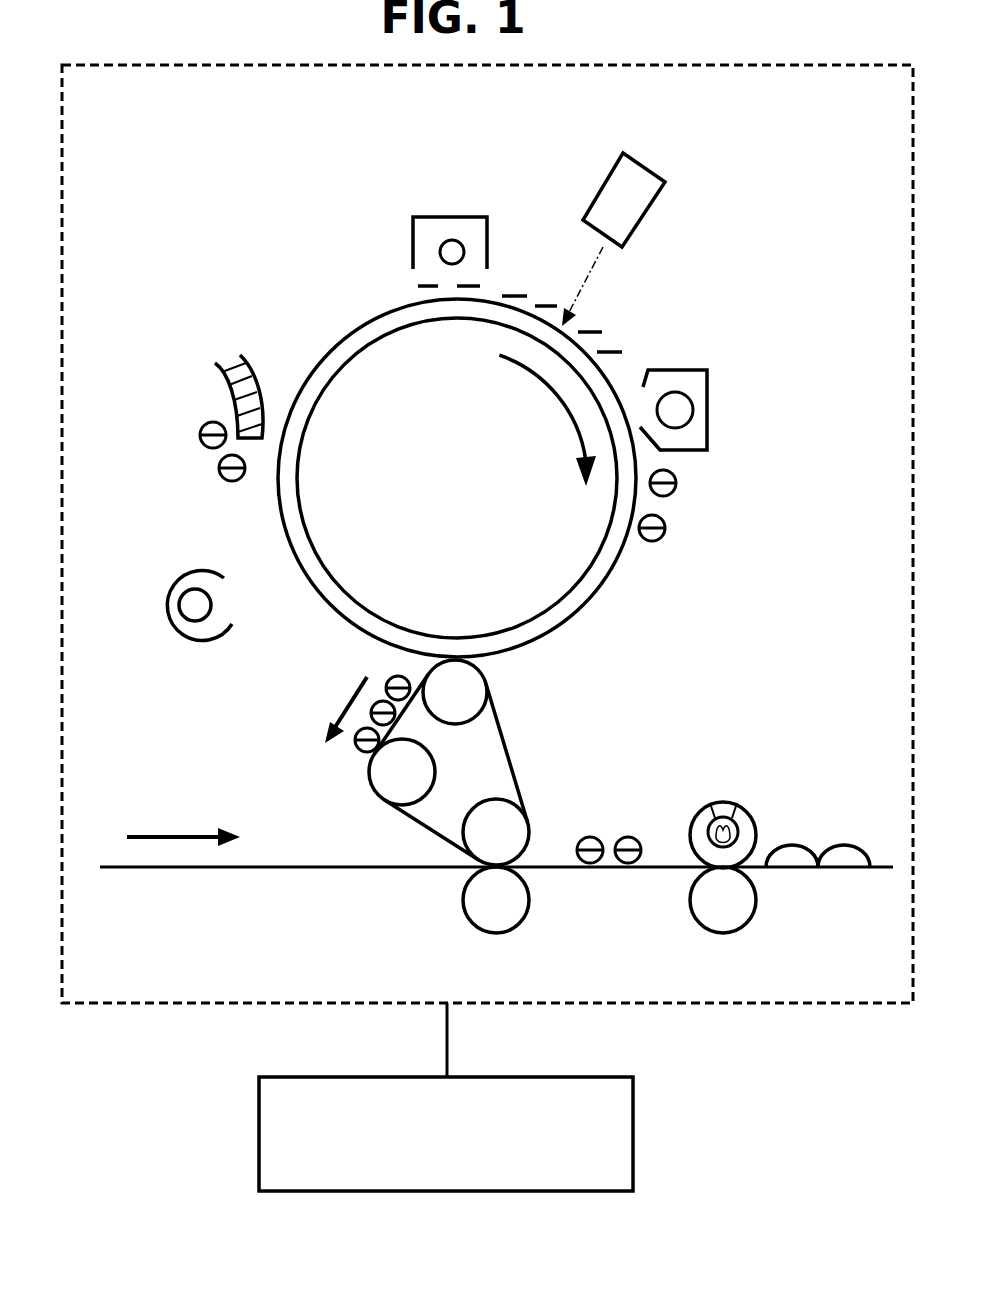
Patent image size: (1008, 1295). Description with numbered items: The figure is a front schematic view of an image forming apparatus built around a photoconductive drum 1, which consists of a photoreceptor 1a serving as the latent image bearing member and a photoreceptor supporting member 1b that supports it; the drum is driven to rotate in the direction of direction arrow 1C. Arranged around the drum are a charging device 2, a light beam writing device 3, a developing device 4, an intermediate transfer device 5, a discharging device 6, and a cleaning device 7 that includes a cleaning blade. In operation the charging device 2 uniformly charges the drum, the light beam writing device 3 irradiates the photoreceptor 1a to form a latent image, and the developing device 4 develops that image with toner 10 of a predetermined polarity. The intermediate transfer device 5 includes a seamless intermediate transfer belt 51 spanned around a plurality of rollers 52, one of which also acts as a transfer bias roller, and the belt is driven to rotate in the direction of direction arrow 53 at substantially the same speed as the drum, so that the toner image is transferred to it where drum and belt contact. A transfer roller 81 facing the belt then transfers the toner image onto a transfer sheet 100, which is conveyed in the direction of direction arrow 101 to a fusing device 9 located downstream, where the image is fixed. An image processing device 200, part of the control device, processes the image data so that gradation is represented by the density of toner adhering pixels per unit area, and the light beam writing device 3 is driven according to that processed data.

The photoconductive drum 1 is at (419, 467).
The photoreceptor 1a is at (398, 318).
The photoreceptor supporting member 1b is at (373, 363).
The direction arrow 1C is at (548, 392).
The charging device 2 is at (492, 205).
The light beam writing device 3 is at (668, 170).
The developing device 4 is at (724, 412).
The intermediate transfer device 5 is at (448, 762).
The discharging device 6 is at (165, 660).
The cleaning device 7 is at (210, 385).
The fusing device 9 is at (765, 803).
The toner 10 is at (678, 482).
The intermediate transfer belt 51 is at (503, 728).
The rollers 52 is at (477, 717).
The direction arrow 53 is at (330, 700).
The transfer roller 81 is at (522, 922).
The transfer sheet 100 is at (258, 870).
The direction arrow 101 is at (155, 835).
The image processing device 200 is at (633, 1125).